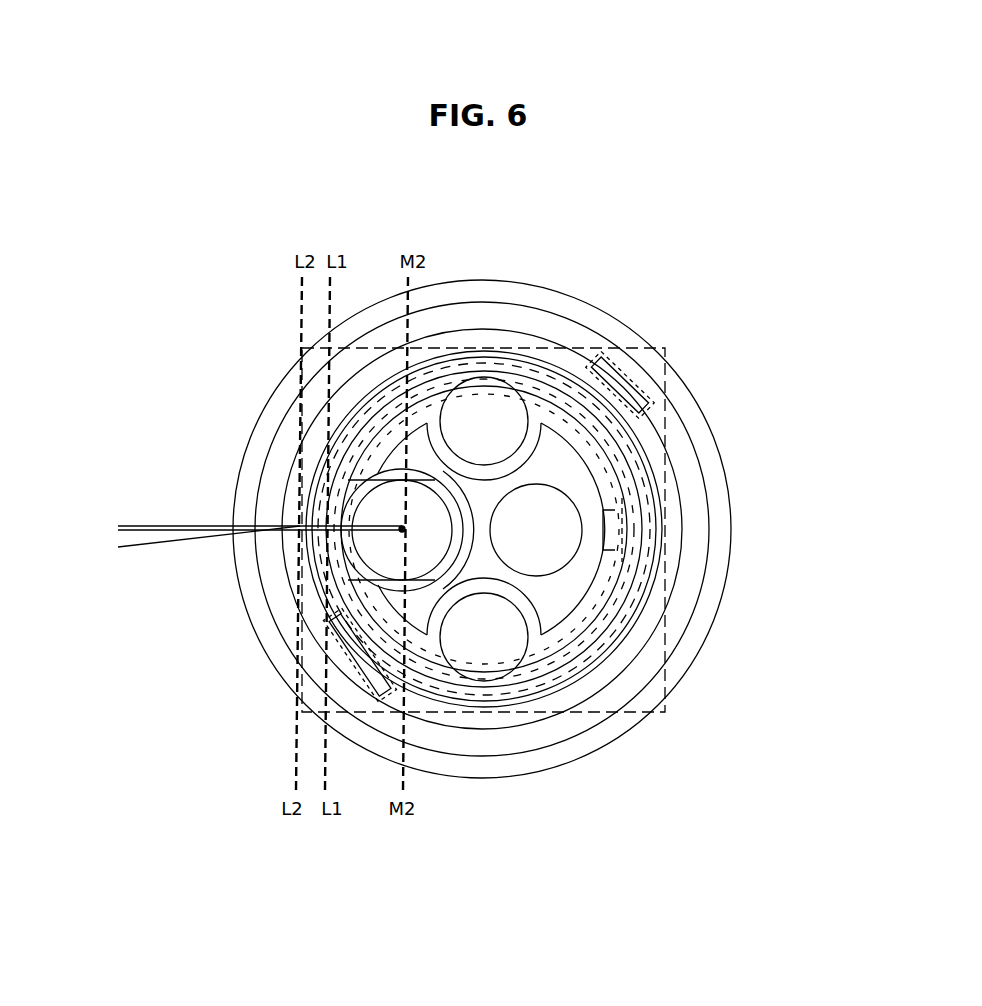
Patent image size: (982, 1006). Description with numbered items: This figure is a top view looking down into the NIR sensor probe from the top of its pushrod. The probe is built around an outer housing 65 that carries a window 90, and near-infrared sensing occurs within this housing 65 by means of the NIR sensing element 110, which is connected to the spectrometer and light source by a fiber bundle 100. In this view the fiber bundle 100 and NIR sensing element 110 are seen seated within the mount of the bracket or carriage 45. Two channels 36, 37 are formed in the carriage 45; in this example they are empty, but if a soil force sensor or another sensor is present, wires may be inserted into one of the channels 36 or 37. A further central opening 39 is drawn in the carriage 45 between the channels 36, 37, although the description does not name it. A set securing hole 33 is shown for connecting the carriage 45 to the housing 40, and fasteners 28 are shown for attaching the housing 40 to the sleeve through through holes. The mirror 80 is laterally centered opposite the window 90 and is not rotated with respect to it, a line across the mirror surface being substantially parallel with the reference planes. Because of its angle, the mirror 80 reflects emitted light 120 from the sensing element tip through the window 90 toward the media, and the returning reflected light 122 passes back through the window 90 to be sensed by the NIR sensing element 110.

The mirror 80 is at (378, 450).
The channel 37 is at (484, 414).
The housing 40 is at (562, 346).
The fasteners 28 is at (635, 378).
The window 90 is at (300, 460).
The housing 65 is at (733, 450).
The reflected light 122 is at (153, 525).
The emitted light 120 is at (180, 540).
The fiber bundle 100 is at (402, 529).
The NIR sensing element 110 is at (260, 610).
The set securing hole 33 is at (605, 528).
The central passage 39 is at (558, 542).
The carriage 45 is at (562, 583).
The channel 36 is at (493, 652).